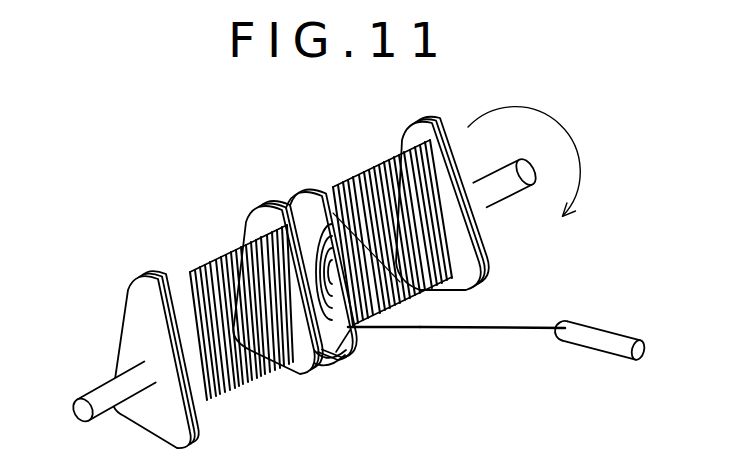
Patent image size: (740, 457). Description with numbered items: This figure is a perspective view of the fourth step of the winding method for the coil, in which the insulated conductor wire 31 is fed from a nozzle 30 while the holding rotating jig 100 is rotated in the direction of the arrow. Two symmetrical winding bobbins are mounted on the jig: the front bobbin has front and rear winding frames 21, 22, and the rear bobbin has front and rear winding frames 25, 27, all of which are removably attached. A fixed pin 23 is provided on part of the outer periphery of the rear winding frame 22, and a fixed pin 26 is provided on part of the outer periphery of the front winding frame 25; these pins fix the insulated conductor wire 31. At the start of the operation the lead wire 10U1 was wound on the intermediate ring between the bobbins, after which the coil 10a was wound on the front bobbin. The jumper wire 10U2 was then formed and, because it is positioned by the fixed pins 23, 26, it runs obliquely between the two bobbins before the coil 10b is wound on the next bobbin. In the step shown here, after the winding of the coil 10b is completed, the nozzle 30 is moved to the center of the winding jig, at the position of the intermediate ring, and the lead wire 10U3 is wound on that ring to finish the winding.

The holding rotating jig 100 is at (441, 123).
The front winding frame 21 is at (157, 273).
The rear winding frame 22 is at (270, 207).
The fixed pin 23 is at (334, 355).
The front winding frame 25 is at (312, 190).
The fixed pin 26 is at (410, 298).
The rear winding frame 27 is at (428, 120).
The nozzle 30 is at (620, 328).
The insulated conductor wire 31 is at (529, 327).
The coil 10a is at (218, 252).
The coil 10b is at (372, 168).
The lead wire 10U1 is at (352, 343).
The jumper wire 10U2 is at (333, 213).
The lead wire 10U3 is at (407, 336).